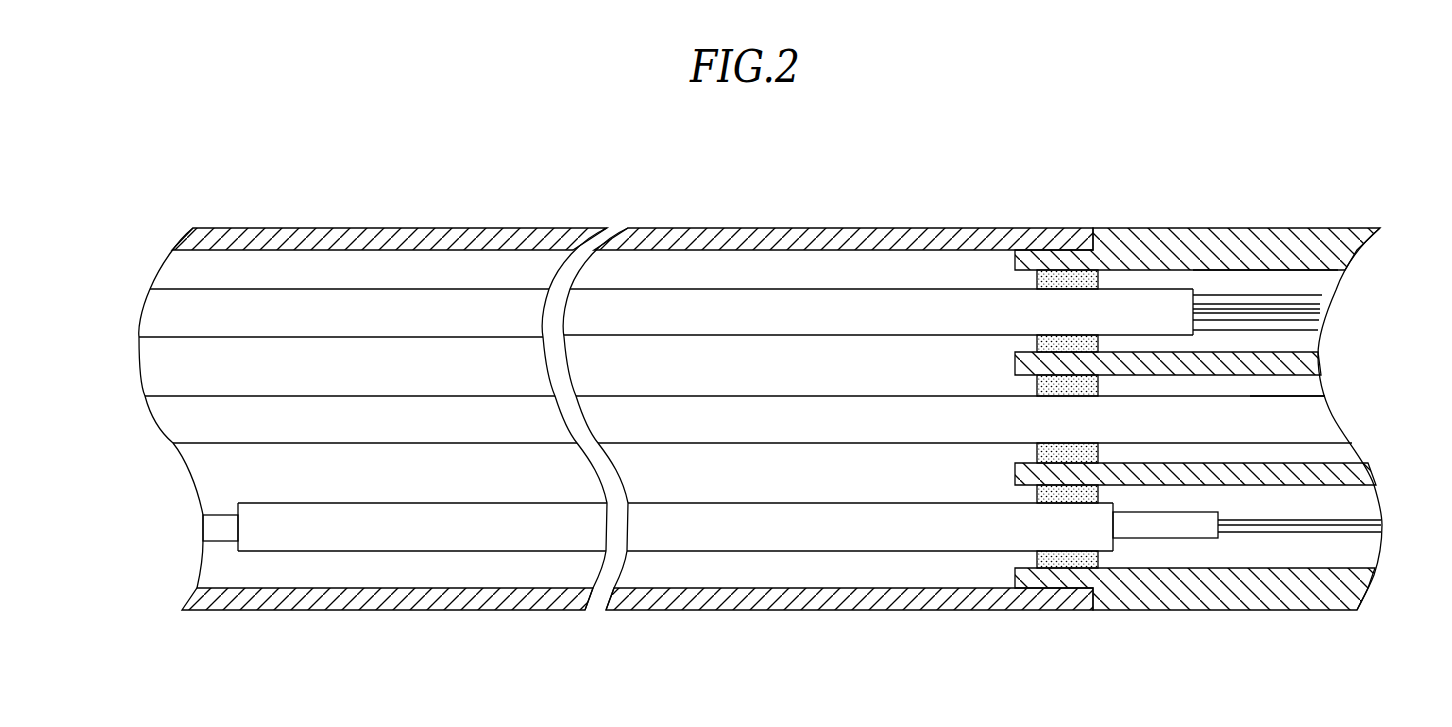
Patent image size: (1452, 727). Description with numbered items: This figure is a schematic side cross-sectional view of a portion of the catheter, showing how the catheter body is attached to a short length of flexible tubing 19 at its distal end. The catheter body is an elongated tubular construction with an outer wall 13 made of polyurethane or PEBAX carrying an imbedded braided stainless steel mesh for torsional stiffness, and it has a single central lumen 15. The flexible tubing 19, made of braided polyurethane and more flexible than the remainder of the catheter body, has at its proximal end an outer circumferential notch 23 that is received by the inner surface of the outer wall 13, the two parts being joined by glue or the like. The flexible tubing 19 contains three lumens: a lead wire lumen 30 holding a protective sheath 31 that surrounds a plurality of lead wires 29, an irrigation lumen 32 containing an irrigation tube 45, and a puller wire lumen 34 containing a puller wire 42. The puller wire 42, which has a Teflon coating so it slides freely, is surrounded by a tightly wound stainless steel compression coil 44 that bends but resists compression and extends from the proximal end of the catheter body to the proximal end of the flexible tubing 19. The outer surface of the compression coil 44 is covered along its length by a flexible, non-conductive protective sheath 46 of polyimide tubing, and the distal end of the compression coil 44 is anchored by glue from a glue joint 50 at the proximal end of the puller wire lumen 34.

The outer wall 13 is at (938, 228).
The central lumen 15 is at (372, 472).
The flexible tubing 19 is at (1172, 228).
The outer circumferential notch 23 is at (1078, 228).
The lead wires 29 is at (1220, 292).
The lead wire lumen 30 is at (1280, 283).
The protective sheath 31 is at (1152, 308).
The irrigation lumen 32 is at (1297, 383).
The puller wire lumen 34 is at (1340, 505).
The puller wire 42 is at (1343, 533).
The compression coil 44 is at (218, 541).
The irrigation tube 45 is at (1272, 394).
The protective sheath 46 is at (953, 551).
The glue joint 50 is at (1098, 556).